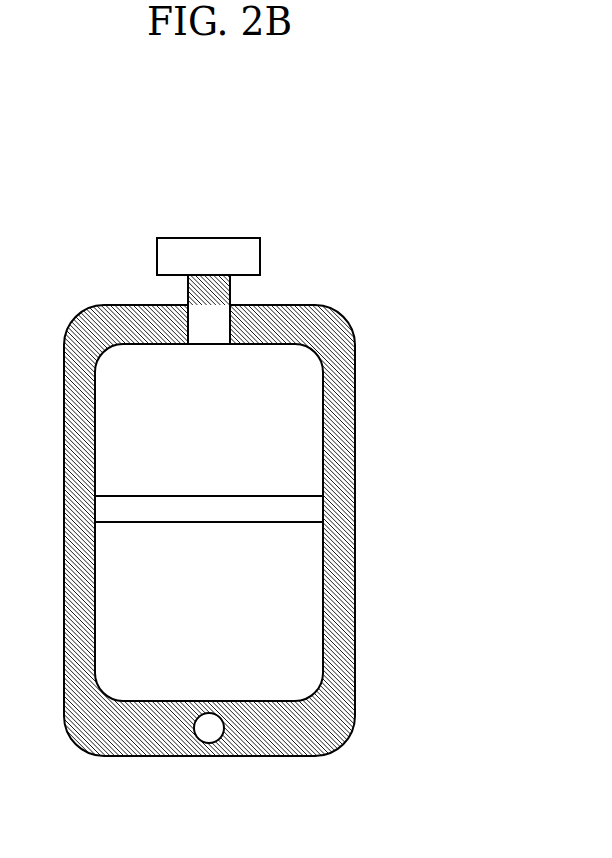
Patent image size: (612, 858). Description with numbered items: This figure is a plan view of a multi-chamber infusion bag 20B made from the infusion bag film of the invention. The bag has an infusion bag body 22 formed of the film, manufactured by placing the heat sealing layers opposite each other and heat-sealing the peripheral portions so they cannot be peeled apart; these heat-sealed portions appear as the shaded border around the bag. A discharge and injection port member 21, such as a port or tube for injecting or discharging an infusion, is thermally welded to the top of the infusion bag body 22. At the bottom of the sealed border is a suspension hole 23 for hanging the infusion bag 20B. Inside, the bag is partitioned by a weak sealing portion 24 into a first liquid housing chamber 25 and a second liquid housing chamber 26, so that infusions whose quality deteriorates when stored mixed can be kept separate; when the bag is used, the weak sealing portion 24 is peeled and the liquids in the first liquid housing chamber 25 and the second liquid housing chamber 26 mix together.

The infusion bag 20B is at (306, 496).
The discharge and injection port member 21 is at (213, 246).
The infusion bag body 22 is at (356, 415).
The suspension hole 23 is at (207, 737).
The weak sealing portion 24 is at (250, 523).
The first liquid housing chamber 25 is at (300, 465).
The second liquid housing chamber 26 is at (302, 620).